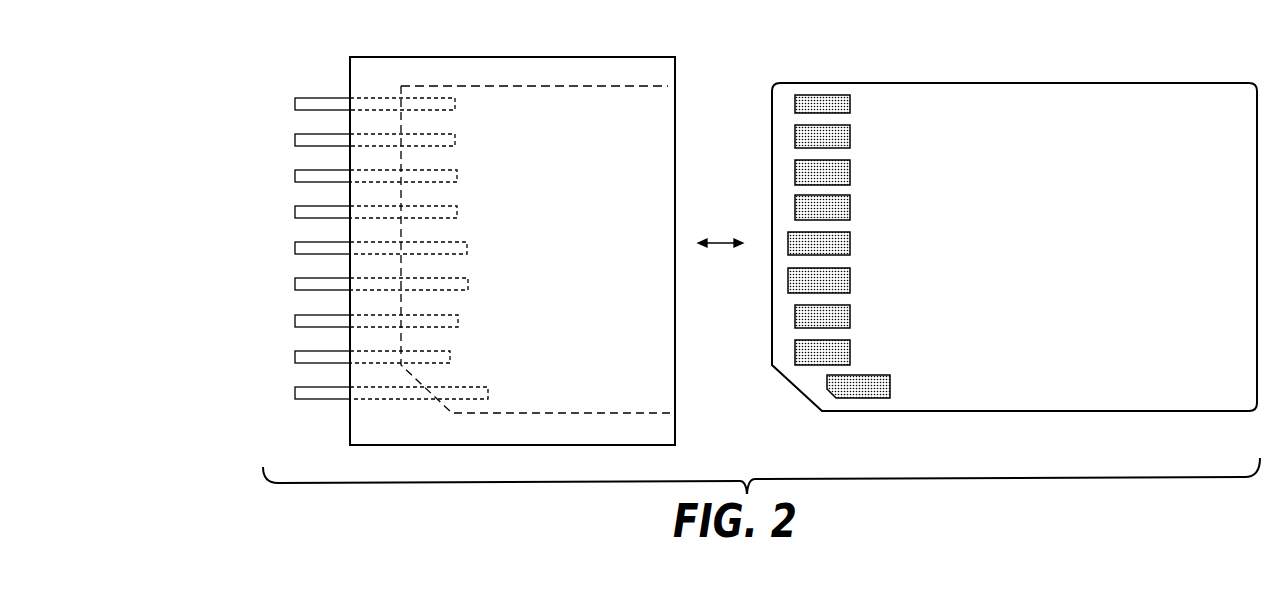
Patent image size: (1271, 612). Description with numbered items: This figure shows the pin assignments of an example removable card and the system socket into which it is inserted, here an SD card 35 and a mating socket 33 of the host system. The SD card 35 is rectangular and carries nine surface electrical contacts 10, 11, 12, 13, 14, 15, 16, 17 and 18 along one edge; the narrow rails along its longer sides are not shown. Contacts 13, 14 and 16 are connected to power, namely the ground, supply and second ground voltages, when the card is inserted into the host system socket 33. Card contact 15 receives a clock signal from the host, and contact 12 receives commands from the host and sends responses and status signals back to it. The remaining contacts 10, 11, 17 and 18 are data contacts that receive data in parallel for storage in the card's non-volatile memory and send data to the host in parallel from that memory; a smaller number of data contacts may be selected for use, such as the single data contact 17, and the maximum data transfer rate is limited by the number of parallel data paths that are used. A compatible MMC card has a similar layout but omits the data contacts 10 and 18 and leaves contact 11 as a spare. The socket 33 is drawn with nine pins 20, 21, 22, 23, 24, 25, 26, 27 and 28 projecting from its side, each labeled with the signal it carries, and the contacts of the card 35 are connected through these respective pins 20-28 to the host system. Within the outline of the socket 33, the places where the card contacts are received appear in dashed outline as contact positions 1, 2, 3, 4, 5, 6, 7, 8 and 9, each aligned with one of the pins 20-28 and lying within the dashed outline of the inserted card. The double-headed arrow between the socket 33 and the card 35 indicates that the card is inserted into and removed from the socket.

The contact pad position 1 is at (450, 358).
The contact pad position 2 is at (458, 322).
The contact pad position 3 is at (468, 285).
The contact pad position 4 is at (467, 249).
The contact pad position 5 is at (457, 213).
The contact pad position 6 is at (457, 177).
The contact pad position 7 is at (455, 141).
The contact pad position 8 is at (455, 105).
The contact pad position 9 is at (488, 394).
The data contact 10 is at (890, 385).
The data contact 11 is at (850, 350).
The command contact 12 is at (850, 315).
The power contact 13 is at (850, 279).
The power contact 14 is at (850, 242).
The clock contact 15 is at (850, 206).
The power contact 16 is at (850, 170).
The data contact 17 is at (850, 135).
The data contact 18 is at (850, 104).
The socket pin 20 is at (347, 387).
The socket pin 21 is at (347, 351).
The socket pin 22 is at (347, 315).
The socket pin 23 is at (347, 278).
The socket pin 24 is at (347, 242).
The socket pin 25 is at (347, 206).
The socket pin 26 is at (347, 170).
The socket pin 27 is at (347, 134).
The socket pin 28 is at (347, 98).
The socket 33 is at (700, 430).
The SD card 35 is at (1122, 429).